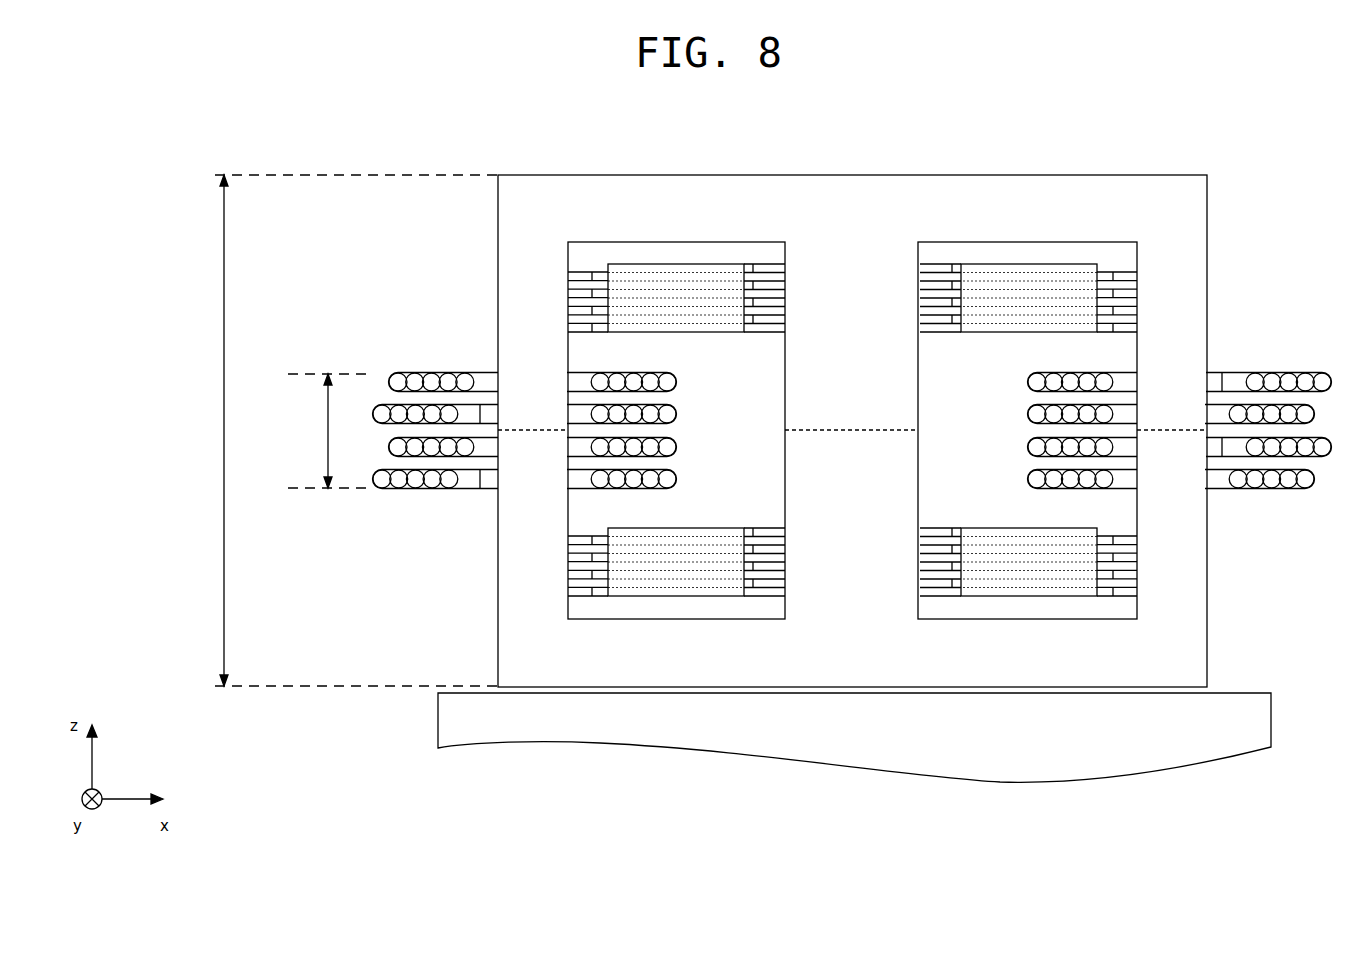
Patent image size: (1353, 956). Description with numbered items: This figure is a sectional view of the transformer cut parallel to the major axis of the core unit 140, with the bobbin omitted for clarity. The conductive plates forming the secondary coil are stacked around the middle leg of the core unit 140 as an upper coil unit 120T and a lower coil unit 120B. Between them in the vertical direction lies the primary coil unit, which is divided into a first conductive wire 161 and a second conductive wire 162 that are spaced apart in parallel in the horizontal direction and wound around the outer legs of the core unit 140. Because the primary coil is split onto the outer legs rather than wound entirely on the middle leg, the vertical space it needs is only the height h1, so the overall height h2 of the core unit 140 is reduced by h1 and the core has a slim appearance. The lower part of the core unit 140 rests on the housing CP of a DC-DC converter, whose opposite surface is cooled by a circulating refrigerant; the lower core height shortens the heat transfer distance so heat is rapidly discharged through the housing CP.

The core unit 140 is at (847, 193).
The upper coil unit 120T is at (998, 284).
The lower coil unit 120B is at (1120, 562).
The first conductive wire 161 is at (415, 363).
The second conductive wire 162 is at (1288, 357).
The housing CP is at (488, 740).
The height occupied by the primary coil unit h1 is at (329, 431).
The overall height of the core unit h2 is at (356, 430).